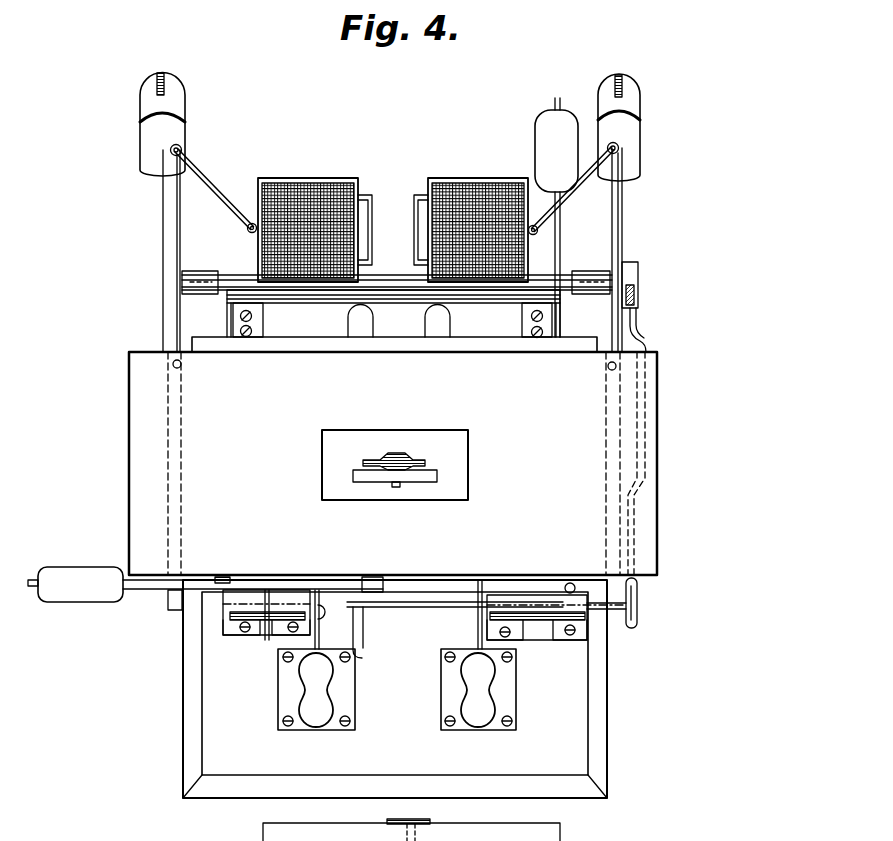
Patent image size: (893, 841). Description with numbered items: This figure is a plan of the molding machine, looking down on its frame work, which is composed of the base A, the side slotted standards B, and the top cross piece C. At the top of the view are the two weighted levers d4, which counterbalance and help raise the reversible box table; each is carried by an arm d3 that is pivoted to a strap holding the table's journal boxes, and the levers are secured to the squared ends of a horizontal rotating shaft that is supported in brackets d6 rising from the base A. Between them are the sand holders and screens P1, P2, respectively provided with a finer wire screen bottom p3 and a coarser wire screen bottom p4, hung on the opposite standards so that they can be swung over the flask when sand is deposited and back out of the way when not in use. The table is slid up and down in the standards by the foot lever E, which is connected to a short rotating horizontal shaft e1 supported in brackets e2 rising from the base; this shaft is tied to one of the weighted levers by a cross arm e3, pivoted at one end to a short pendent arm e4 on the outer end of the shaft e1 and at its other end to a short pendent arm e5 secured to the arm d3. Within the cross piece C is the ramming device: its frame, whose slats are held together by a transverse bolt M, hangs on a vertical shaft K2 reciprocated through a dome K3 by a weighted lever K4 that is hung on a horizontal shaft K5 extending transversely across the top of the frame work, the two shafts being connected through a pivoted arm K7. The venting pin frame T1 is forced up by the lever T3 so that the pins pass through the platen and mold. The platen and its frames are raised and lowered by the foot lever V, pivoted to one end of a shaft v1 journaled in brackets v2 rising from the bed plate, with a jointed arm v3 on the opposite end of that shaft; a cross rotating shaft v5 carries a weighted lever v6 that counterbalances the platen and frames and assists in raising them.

The weighted lever d4 is at (141, 152).
The arm d3 is at (163, 222).
The bracket d6 is at (186, 282).
The short pendent arm e5 is at (633, 290).
The sand holder and screen P1 is at (313, 178).
The finer wire screen bottom p3 is at (343, 186).
The coarser wire screen bottom p4 is at (440, 186).
The sand holder and screen P2 is at (480, 178).
The weighted lever v6 is at (556, 217).
The base A is at (328, 331).
The frame T1 is at (399, 320).
The cross rotating shaft v5 is at (395, 314).
The top cross piece C is at (393, 463).
The side slotted standard B is at (170, 452).
The cross arm e3 is at (632, 545).
The vertical shaft K2 is at (414, 448).
The dome K3 is at (382, 460).
The arm K7 is at (397, 487).
The weighted lever K4 is at (165, 593).
The horizontal shaft K5 is at (222, 580).
The transverse bolt M is at (432, 822).
The lever T3 is at (419, 605).
The shaft v1 is at (265, 618).
The jointed arm v3 is at (228, 622).
The bracket v2 is at (272, 638).
The short rotating horizontal shaft e1 is at (553, 619).
The bracket e2 is at (487, 632).
The short pendent arm e4 is at (631, 628).
The foot lever V is at (331, 692).
The foot lever E is at (480, 690).